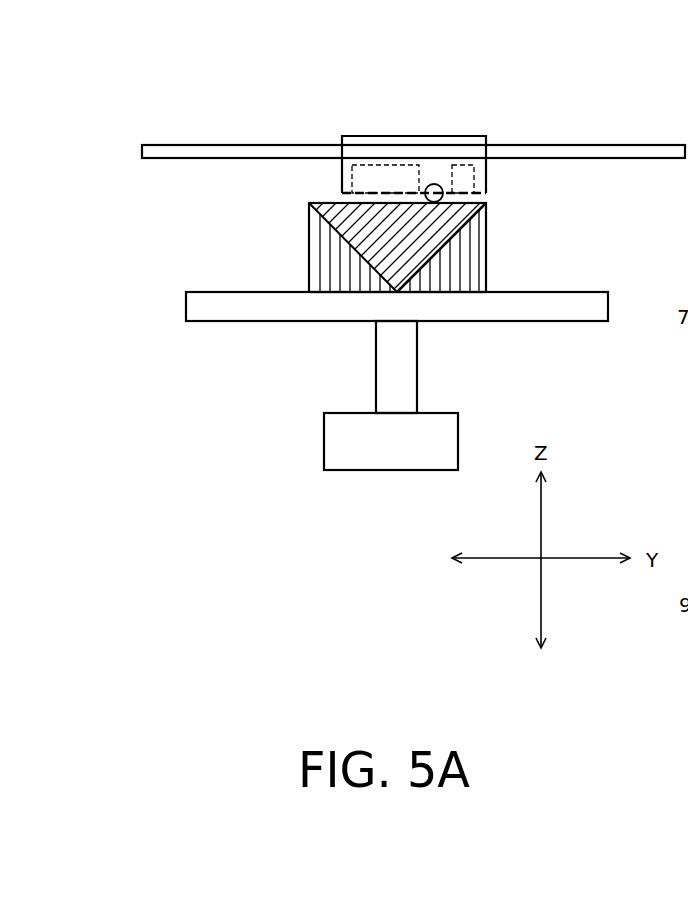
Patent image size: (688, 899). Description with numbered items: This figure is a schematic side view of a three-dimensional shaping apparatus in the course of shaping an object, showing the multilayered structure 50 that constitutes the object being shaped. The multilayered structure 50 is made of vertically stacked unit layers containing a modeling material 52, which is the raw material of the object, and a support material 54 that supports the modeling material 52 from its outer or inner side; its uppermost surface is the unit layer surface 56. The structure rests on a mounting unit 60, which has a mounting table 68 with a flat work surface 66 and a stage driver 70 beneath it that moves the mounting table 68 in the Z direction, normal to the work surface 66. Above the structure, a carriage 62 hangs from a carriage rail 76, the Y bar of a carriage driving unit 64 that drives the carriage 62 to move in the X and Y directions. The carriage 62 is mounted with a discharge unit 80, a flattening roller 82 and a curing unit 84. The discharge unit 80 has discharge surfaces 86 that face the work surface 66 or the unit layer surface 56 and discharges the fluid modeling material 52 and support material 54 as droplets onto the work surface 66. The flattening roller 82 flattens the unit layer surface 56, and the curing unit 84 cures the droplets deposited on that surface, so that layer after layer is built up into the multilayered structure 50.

The multilayered structure 50 is at (592, 182).
The modeling material 52 is at (433, 224).
The support material 54 is at (447, 272).
The unit layer surface 56 is at (330, 203).
The mounting unit 60 is at (223, 360).
The carriage 62 is at (477, 143).
The carriage driving unit 64 is at (588, 116).
The work surface 66 is at (220, 291).
The mounting table 68 is at (340, 308).
The stage driver 70 is at (337, 441).
The carriage rail 76 is at (622, 148).
The discharge unit 80 is at (365, 165).
The flattening roller 82 is at (434, 184).
The curing unit 84 is at (460, 165).
The discharge surfaces 86 is at (378, 198).